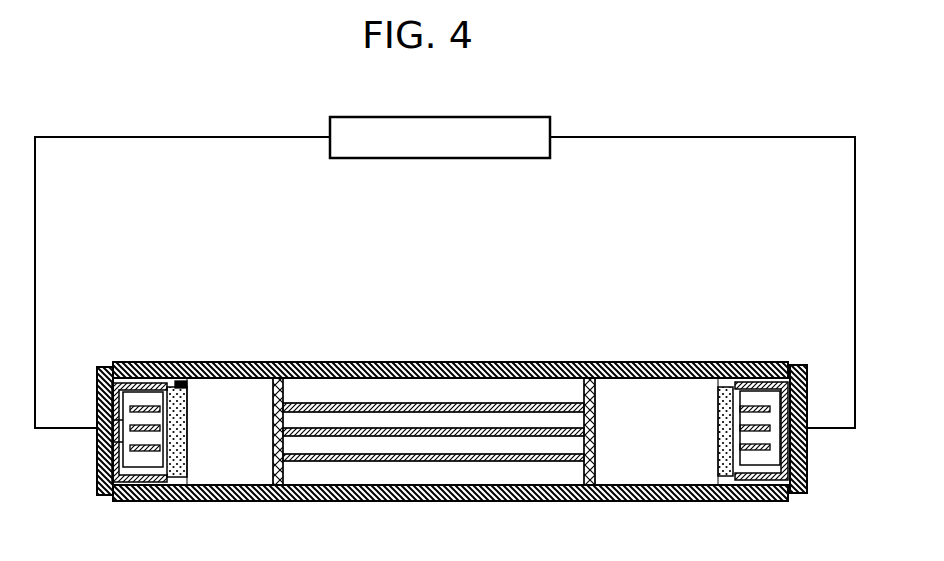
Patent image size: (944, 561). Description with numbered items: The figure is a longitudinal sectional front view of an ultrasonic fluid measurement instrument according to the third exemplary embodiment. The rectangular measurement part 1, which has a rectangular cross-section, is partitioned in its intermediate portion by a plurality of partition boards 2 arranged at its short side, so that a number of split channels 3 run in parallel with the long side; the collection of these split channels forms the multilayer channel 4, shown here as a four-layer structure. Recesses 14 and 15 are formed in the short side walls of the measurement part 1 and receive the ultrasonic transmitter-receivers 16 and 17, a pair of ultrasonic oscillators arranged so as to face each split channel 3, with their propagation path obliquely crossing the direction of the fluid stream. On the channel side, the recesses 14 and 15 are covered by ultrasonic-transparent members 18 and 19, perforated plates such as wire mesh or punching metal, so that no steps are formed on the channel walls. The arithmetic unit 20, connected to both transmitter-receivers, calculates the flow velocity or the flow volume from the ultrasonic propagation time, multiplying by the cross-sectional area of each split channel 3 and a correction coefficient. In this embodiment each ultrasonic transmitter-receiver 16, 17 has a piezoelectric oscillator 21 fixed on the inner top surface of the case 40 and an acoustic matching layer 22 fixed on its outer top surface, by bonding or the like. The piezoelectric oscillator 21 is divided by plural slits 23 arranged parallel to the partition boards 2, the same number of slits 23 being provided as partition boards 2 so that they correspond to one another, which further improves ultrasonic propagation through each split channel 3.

The measurement part 1 is at (593, 360).
The partition boards 2 is at (333, 460).
The split channels 3 is at (457, 477).
The multilayer channel 4 is at (568, 478).
The recess 14 is at (227, 392).
The recess 15 is at (653, 400).
The ultrasonic transmitter-receiver 16 is at (160, 370).
The ultrasonic transmitter-receiver 17 is at (757, 372).
The ultrasonic-transparent member 18 is at (272, 462).
The ultrasonic-transparent member 19 is at (600, 485).
The arithmetic unit 20 is at (448, 117).
The piezoelectric oscillator 21 is at (775, 488).
The acoustic matching layer 22 is at (718, 462).
The slits 23 is at (771, 447).
The case 40 is at (757, 483).